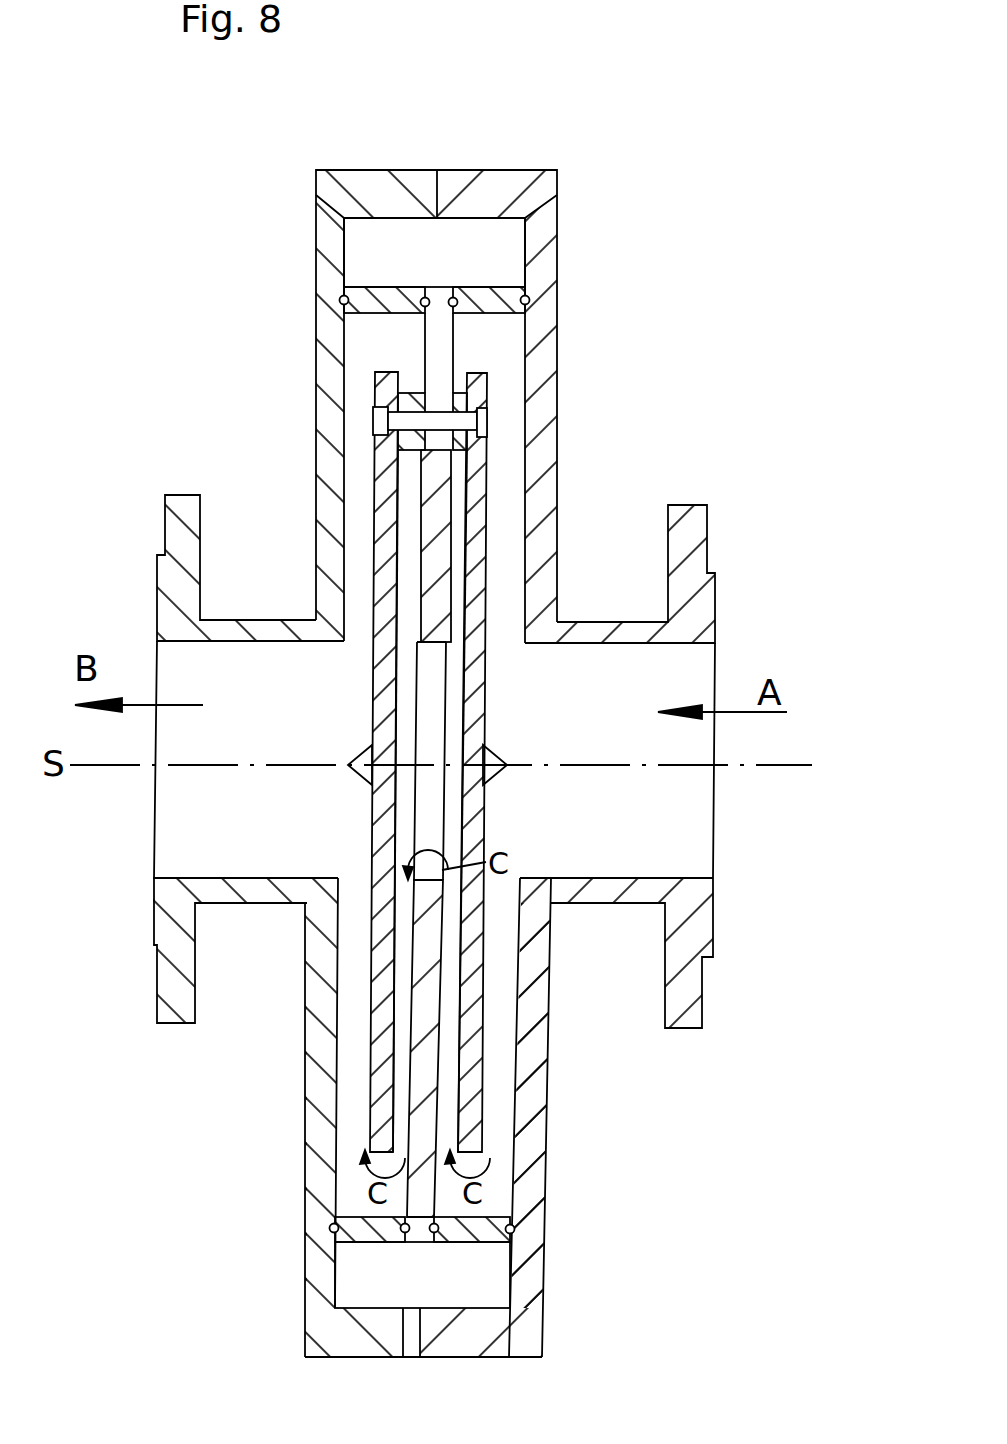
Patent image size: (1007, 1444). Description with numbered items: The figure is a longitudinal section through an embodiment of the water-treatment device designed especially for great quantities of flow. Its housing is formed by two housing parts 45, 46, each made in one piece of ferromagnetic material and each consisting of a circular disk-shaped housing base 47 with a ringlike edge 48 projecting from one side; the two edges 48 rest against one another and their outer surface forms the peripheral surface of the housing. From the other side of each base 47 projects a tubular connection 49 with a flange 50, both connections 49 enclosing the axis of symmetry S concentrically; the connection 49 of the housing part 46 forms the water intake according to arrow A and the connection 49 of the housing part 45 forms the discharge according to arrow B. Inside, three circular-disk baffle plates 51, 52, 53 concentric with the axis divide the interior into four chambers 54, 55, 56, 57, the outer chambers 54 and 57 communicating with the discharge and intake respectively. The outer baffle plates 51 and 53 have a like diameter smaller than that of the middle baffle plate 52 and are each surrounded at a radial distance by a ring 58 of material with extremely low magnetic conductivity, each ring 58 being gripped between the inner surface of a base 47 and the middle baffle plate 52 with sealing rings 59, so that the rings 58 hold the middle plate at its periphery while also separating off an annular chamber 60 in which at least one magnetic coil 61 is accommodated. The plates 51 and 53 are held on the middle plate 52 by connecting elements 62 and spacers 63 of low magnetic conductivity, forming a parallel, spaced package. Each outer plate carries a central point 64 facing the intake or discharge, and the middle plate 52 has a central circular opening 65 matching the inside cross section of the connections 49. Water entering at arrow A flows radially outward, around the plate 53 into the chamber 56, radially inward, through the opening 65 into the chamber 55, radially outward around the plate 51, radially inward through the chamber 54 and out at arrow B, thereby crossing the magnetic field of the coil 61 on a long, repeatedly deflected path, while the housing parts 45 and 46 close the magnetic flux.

The housing part 45 is at (283, 195).
The housing part 46 is at (580, 228).
The housing base 47 is at (330, 380).
The ringlike edge 48 is at (400, 195).
The tubular connection 49 is at (272, 630).
The flange 50 is at (705, 600).
The baffle plate 51 is at (385, 838).
The middle baffle plate 52 is at (423, 1045).
The baffle plate 53 is at (470, 1028).
The chamber 54 is at (355, 1020).
The chamber 55 is at (400, 1082).
The chamber 56 is at (450, 1102).
The chamber 57 is at (498, 1070).
The ring 58 is at (500, 298).
The sealing ring 59 is at (340, 302).
The annular chamber 60 is at (550, 240).
The magnetic coil 61 is at (427, 270).
The connecting element 62 is at (462, 419).
The spacer 63 is at (400, 447).
The point 64 is at (364, 755).
The circular opening 65 is at (428, 814).